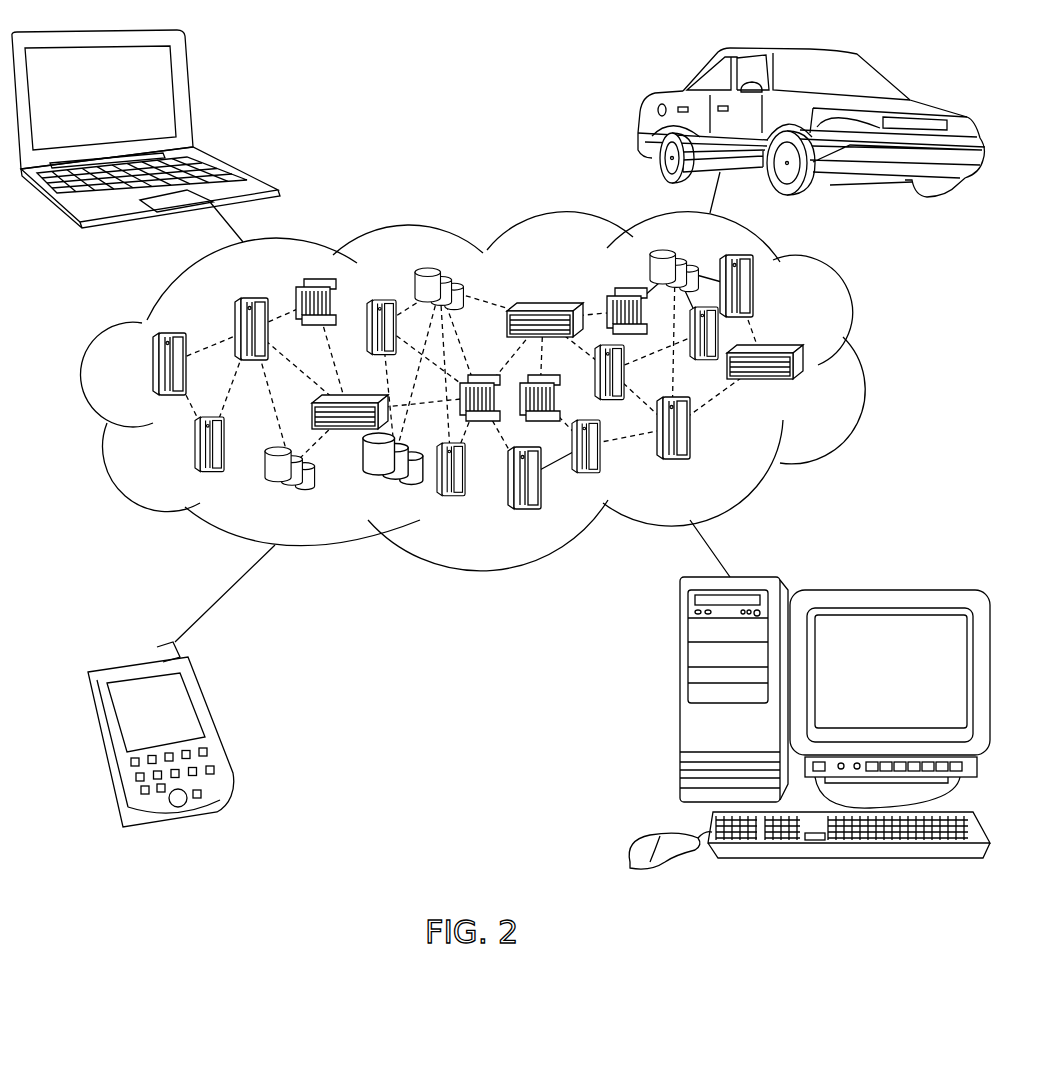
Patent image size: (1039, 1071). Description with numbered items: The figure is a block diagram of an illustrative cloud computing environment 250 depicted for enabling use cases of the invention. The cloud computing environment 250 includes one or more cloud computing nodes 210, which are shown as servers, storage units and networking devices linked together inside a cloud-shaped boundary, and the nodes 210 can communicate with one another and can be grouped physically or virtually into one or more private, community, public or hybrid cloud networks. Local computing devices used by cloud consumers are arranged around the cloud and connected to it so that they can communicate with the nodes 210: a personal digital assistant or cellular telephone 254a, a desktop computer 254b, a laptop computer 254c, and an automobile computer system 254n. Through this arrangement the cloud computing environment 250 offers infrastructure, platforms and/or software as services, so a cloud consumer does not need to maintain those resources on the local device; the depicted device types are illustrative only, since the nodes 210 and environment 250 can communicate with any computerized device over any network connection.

The cloud computing nodes 210 is at (818, 387).
The cloud computing environment 250 is at (848, 302).
The personal digital assistant or cellular telephone 254a is at (212, 710).
The desktop computer 254b is at (682, 705).
The laptop computer 254c is at (187, 87).
The automobile computer system 254n is at (653, 95).